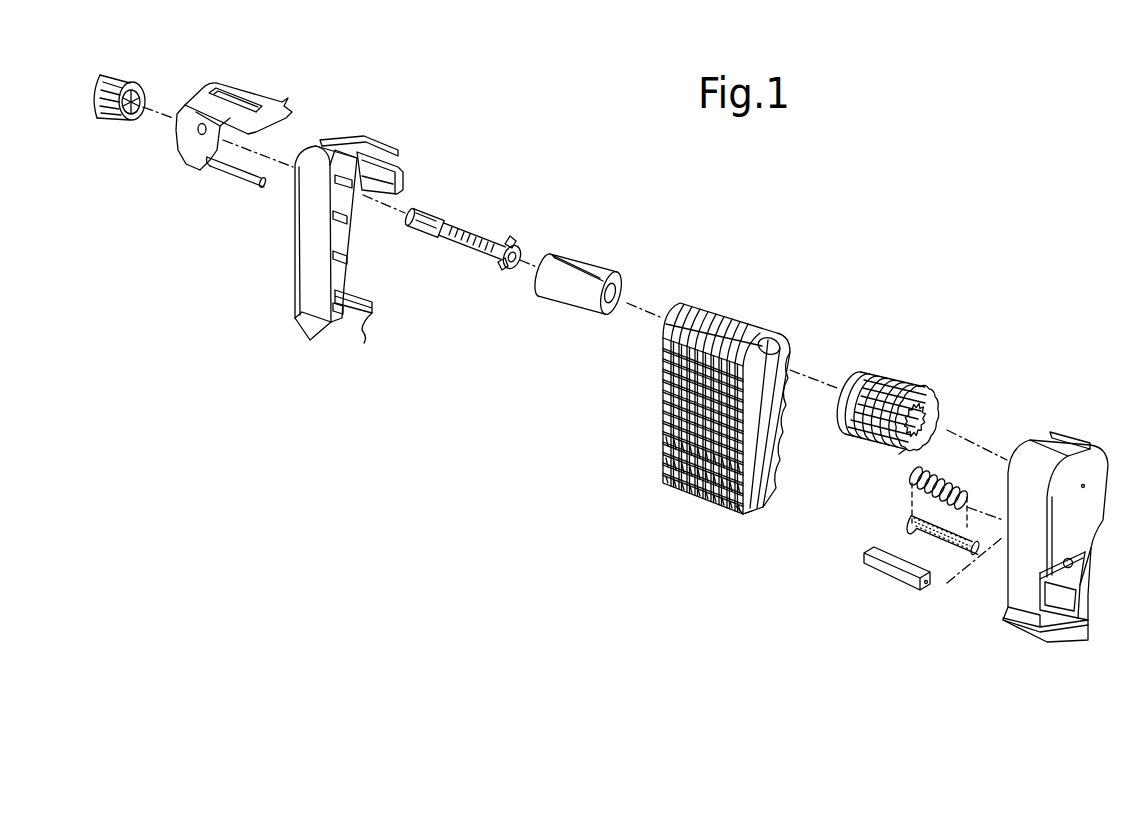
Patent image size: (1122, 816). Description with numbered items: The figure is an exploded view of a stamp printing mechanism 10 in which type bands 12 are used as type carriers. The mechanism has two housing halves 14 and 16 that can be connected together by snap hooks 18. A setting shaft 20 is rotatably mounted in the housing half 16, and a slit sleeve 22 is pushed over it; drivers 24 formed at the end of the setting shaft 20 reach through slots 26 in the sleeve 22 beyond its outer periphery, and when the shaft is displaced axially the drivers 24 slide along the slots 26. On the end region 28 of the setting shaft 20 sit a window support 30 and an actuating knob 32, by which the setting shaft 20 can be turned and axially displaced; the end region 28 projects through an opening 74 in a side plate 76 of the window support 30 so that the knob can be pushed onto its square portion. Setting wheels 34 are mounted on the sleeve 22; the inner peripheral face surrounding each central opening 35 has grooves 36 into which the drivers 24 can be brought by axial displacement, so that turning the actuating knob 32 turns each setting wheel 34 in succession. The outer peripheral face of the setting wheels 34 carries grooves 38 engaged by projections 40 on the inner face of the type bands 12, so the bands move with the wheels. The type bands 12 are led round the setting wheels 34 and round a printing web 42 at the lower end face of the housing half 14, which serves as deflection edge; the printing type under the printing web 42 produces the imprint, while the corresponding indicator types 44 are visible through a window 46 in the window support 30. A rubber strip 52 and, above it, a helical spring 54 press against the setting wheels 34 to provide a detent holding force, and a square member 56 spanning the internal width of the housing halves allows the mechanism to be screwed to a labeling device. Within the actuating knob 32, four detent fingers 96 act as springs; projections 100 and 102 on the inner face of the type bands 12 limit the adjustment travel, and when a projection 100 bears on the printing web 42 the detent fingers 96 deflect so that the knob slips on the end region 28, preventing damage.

The printing mechanism 10 is at (757, 310).
The type bands 12 is at (705, 300).
The housing half 14 is at (1097, 455).
The housing half 16 is at (362, 147).
The snap hooks 18 is at (402, 174).
The setting shaft 20 is at (472, 228).
The slit sleeve 22 is at (572, 290).
The drivers 24 is at (515, 240).
The slots 26 is at (580, 258).
The end region 28 is at (424, 212).
The window support 30 is at (281, 108).
The actuating knob 32 is at (127, 77).
The setting wheels 34 is at (893, 385).
The central opening 35 is at (899, 453).
The grooves 36 is at (937, 447).
The grooves 38 is at (926, 405).
The projections 40 is at (750, 463).
The printing web 42 is at (1008, 622).
The indicator types 44 is at (667, 476).
The window 46 is at (228, 100).
The rubber strip 52 is at (914, 524).
The helical spring 54 is at (945, 478).
The square member 56 is at (886, 566).
The opening 74 is at (200, 131).
The side plate 76 is at (204, 160).
The detent fingers 96 is at (130, 113).
The projection 100 is at (762, 350).
The projection 102 is at (748, 508).